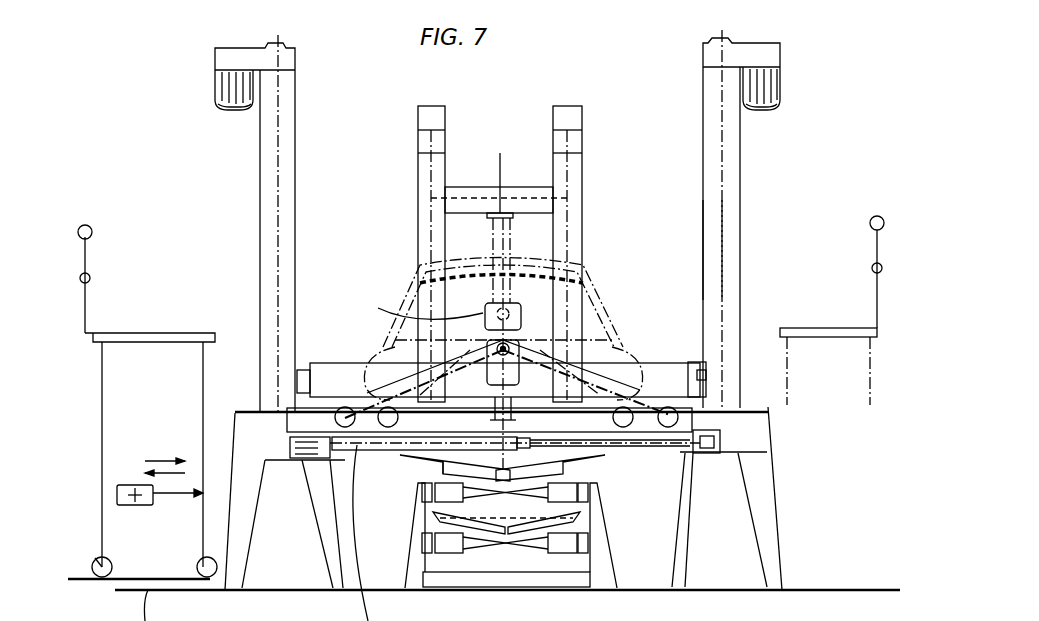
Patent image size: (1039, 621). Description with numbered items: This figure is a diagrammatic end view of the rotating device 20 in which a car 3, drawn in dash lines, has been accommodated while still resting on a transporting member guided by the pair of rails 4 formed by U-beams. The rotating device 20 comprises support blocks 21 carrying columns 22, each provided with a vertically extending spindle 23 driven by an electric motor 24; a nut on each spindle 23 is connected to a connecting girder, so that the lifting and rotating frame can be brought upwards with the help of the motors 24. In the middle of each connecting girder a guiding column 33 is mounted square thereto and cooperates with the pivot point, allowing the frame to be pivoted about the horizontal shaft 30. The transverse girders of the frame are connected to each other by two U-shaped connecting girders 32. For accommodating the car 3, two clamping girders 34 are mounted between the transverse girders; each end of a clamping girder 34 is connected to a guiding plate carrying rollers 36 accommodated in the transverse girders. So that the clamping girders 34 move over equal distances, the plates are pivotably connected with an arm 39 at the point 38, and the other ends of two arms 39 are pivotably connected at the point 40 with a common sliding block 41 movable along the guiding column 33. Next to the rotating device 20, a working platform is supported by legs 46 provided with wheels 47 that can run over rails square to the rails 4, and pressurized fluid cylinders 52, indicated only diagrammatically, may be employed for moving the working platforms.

The car 3 is at (398, 282).
The rails 4 is at (594, 483).
The rotating device 20 is at (742, 208).
The support blocks 21 is at (770, 470).
The columns 22 is at (742, 283).
The spindle 23 is at (725, 250).
The electric motor 24 is at (773, 92).
The horizontal shaft 30 is at (560, 340).
The U-shaped connecting girders 32 is at (582, 158).
The guiding column 33 is at (565, 275).
The clamping girders 34 is at (720, 442).
The rollers 36 is at (725, 402).
The point 38 is at (707, 365).
The arm 39 is at (640, 392).
The point 40 is at (521, 312).
The sliding block 41 is at (378, 308).
The legs 46 is at (100, 420).
The wheels 47 is at (88, 556).
The pressurized fluid cylinders 52 is at (122, 485).